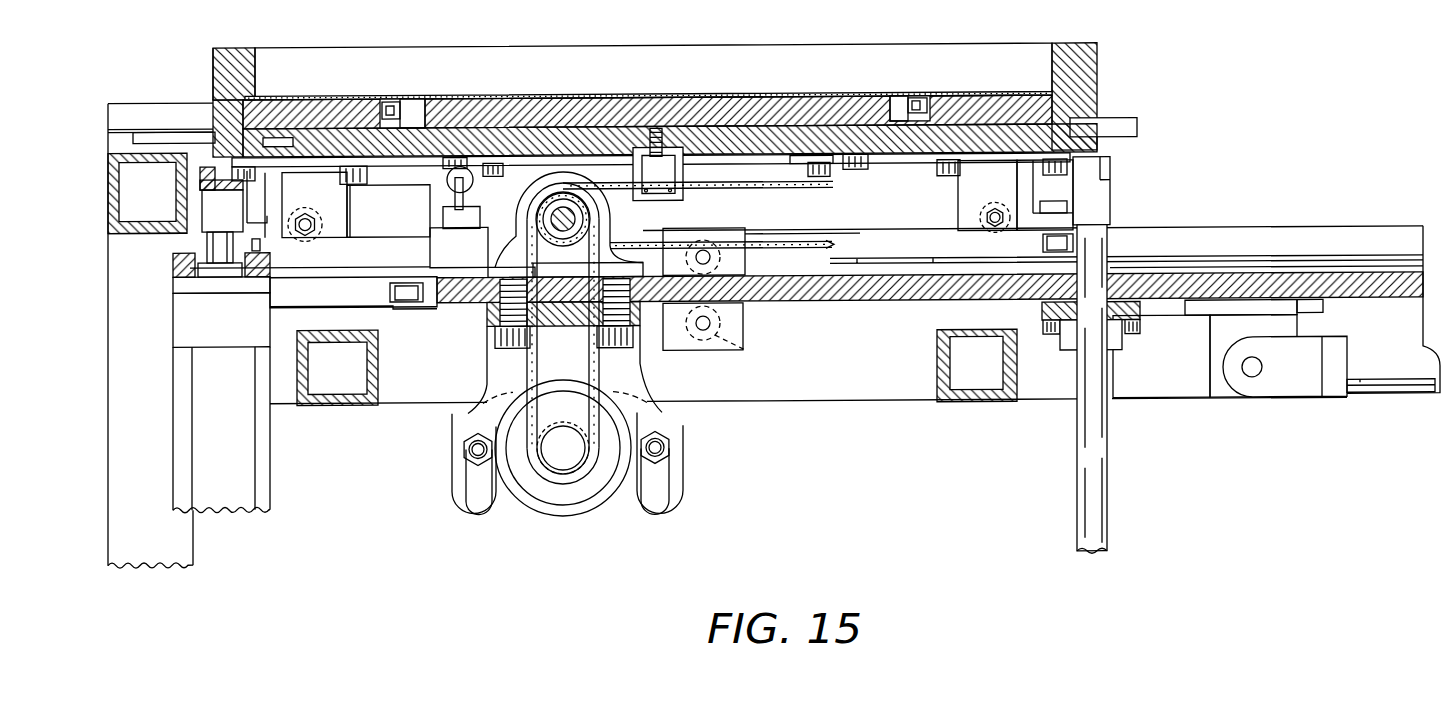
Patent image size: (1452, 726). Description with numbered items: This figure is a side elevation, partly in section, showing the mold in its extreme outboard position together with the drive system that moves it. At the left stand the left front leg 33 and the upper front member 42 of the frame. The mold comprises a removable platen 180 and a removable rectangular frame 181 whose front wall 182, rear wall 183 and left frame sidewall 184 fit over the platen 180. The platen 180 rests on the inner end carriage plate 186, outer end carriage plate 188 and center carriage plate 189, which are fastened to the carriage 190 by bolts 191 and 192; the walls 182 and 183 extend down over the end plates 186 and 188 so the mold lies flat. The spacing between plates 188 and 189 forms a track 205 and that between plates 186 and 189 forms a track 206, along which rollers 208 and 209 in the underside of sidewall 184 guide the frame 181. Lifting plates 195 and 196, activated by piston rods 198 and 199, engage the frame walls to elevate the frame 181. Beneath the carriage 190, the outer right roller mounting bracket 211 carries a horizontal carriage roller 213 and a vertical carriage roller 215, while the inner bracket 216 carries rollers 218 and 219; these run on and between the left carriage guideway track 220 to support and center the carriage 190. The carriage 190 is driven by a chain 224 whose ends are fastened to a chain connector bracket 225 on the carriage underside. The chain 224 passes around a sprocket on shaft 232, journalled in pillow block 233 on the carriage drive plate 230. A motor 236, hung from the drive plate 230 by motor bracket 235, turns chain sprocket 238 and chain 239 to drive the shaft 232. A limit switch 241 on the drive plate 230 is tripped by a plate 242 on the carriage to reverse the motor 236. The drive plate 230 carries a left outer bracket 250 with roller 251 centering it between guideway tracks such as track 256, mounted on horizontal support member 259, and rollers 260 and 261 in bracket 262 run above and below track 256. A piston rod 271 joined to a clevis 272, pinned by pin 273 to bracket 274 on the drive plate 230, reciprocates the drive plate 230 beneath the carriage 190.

The left front leg 33 is at (193, 545).
The upper front member 42 is at (108, 205).
The platen 180 is at (512, 97).
The frame 181 is at (213, 78).
The front wall 182 is at (233, 45).
The rear wall 183 is at (1093, 75).
The left frame sidewall 184 is at (1003, 50).
The inner end carriage plate 186 is at (1073, 110).
The outer end carriage plate 188 is at (257, 94).
The center carriage plate 189 is at (612, 110).
The carriage 190 is at (693, 135).
The bolt 191 is at (870, 169).
The bolt 192 is at (441, 169).
The lifting plate 195 is at (203, 182).
The lifting plate 196 is at (1103, 187).
The piston rod 198 is at (213, 245).
The piston rod 199 is at (1103, 512).
The track 205 is at (412, 113).
The track 206 is at (903, 112).
The roller 208 is at (398, 100).
The roller 209 is at (925, 100).
The outer right roller mounting bracket 211 is at (337, 208).
The carriage roller 213 is at (323, 191).
The carriage roller 215 is at (260, 246).
The roller mounting bracket 216 is at (975, 193).
The carriage roller 218 is at (985, 218).
The carriage roller 219 is at (1045, 246).
The left carriage guideway track 220 is at (1327, 233).
The chain 224 is at (703, 182).
The chain connector bracket 225 is at (635, 176).
The carriage drive plate 230 is at (1243, 276).
The shaft 232 is at (550, 219).
The pillow block 233 is at (600, 226).
The motor bracket 235 is at (655, 428).
The motor 236 is at (605, 505).
The chain sprocket 238 is at (562, 470).
The chain 239 is at (593, 388).
The limit switch 241 is at (437, 248).
The plate 242 is at (464, 183).
The left outer bracket 250 is at (407, 310).
The roller 251 is at (390, 291).
The guideway track 256 is at (285, 294).
The horizontal support member 259 is at (1200, 388).
The roller 260 is at (705, 240).
The roller 261 is at (745, 350).
The bracket 262 is at (745, 326).
The piston rod 271 is at (1362, 392).
The clevis 272 is at (1282, 395).
The pin 273 is at (1262, 369).
The bracket 274 is at (1222, 342).